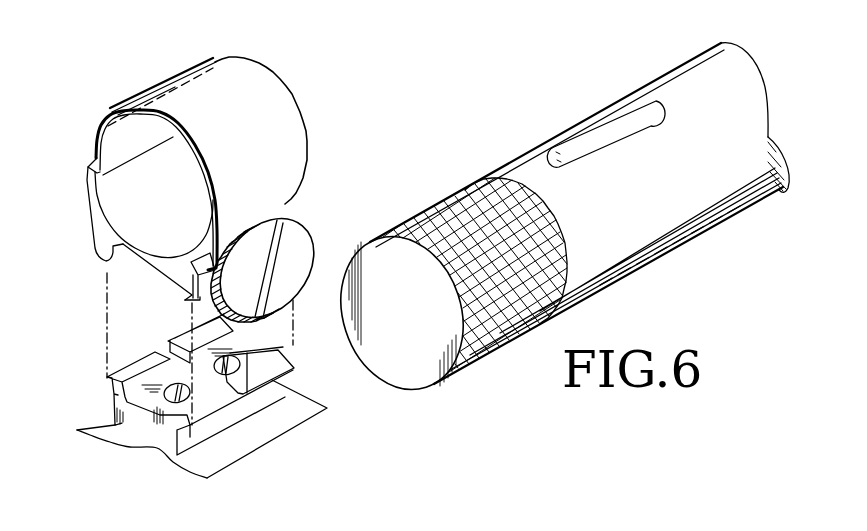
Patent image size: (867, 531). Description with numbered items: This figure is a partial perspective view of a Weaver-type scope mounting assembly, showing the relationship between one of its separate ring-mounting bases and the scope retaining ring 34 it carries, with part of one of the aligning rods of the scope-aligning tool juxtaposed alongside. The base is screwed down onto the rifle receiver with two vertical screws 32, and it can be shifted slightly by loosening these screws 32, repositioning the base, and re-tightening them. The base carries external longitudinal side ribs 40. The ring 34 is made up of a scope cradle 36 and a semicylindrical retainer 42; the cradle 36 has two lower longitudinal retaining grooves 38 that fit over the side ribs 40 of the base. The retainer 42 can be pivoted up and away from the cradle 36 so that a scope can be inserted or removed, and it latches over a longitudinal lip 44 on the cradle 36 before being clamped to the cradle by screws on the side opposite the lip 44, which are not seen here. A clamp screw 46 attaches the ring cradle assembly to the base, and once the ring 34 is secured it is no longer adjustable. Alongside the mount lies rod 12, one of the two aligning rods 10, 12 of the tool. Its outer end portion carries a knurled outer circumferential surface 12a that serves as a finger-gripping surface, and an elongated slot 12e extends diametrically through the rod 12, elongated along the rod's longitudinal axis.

The rod 10 is at (498, 3).
The rod 12 is at (697, 246).
The knurled outer circumferential surface 12a is at (503, 348).
The elongated slot 12e is at (627, 117).
The vertical screws 32 is at (238, 352).
The scope retaining ring 34 is at (290, 107).
The scope cradle 36 is at (107, 222).
The lower longitudinal retaining grooves 38 is at (190, 293).
The external longitudinal side ribs 40 is at (105, 383).
The semicylindrical retainer 42 is at (257, 167).
The longitudinal lip 44 is at (195, 266).
The clamp screw 46 is at (303, 240).